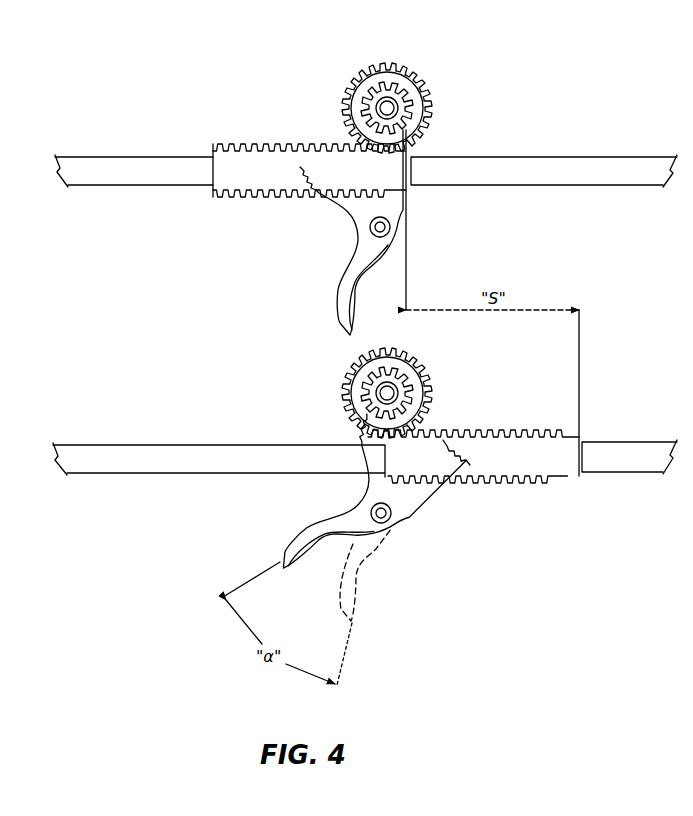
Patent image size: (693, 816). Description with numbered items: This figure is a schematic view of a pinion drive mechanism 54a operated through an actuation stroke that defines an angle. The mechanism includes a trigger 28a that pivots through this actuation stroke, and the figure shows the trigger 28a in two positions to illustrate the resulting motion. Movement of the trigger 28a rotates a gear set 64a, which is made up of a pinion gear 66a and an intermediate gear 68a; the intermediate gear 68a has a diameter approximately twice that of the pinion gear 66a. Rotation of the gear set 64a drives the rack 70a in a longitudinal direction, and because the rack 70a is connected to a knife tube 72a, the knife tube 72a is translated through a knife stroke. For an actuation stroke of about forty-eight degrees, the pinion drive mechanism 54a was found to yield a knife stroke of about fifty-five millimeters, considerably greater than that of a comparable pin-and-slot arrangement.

The pinion drive mechanism 54a is at (210, 54).
The gear set 64a is at (374, 234).
The pinion gear 66a is at (388, 87).
The intermediate gear 68a is at (418, 78).
The rack 70a is at (227, 160).
The knife tube 72a is at (493, 170).
The trigger 28a is at (352, 255).